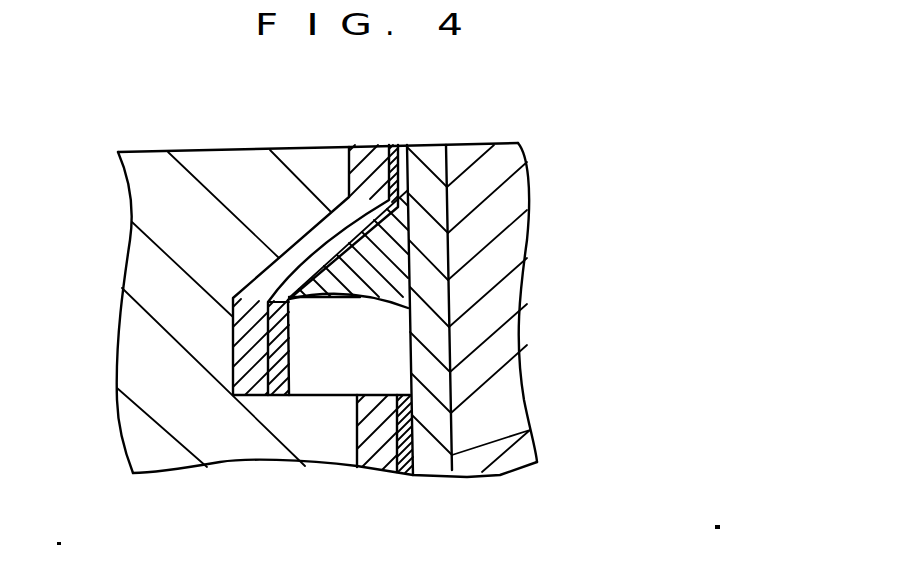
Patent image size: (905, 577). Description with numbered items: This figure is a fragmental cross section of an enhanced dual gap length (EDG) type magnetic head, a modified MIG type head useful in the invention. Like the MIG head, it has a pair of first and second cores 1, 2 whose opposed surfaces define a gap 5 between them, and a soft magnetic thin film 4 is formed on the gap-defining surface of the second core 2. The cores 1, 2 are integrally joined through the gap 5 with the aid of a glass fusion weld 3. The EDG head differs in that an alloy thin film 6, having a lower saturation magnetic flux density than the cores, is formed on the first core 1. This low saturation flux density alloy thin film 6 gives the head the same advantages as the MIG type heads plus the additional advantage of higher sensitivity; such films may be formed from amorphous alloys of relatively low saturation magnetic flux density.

The first core 1 is at (138, 362).
The second core 2 is at (512, 200).
The glass fusion weld 3 is at (396, 295).
The soft magnetic thin film 4 is at (437, 157).
The gap 5 is at (397, 158).
The alloy thin film 6 is at (357, 158).